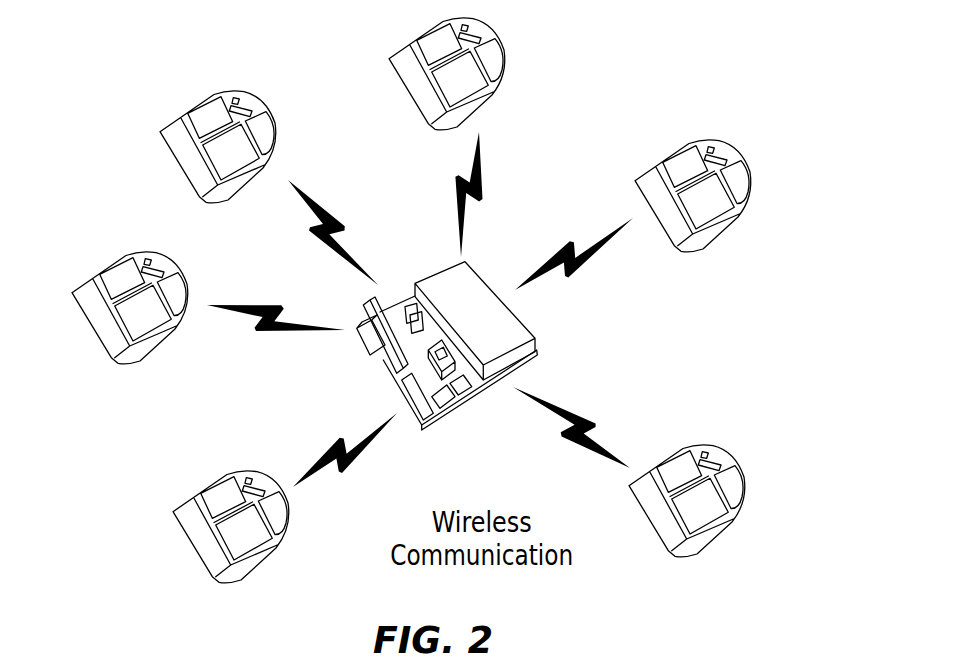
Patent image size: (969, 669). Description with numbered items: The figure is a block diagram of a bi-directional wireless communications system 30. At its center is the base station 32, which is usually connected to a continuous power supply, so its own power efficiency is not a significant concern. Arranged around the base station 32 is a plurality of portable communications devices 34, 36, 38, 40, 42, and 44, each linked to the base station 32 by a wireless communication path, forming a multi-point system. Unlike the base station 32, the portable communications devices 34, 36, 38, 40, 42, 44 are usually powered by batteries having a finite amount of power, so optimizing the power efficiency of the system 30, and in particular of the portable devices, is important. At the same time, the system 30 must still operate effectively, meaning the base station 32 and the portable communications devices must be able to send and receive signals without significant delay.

The communications system 30 is at (93, 115).
The base station 32 is at (528, 328).
The portable communications device 34 is at (696, 445).
The portable communications device 36 is at (675, 150).
The portable communications device 38 is at (508, 67).
The portable communications device 40 is at (260, 103).
The portable communications device 42 is at (131, 253).
The portable communications device 44 is at (213, 478).